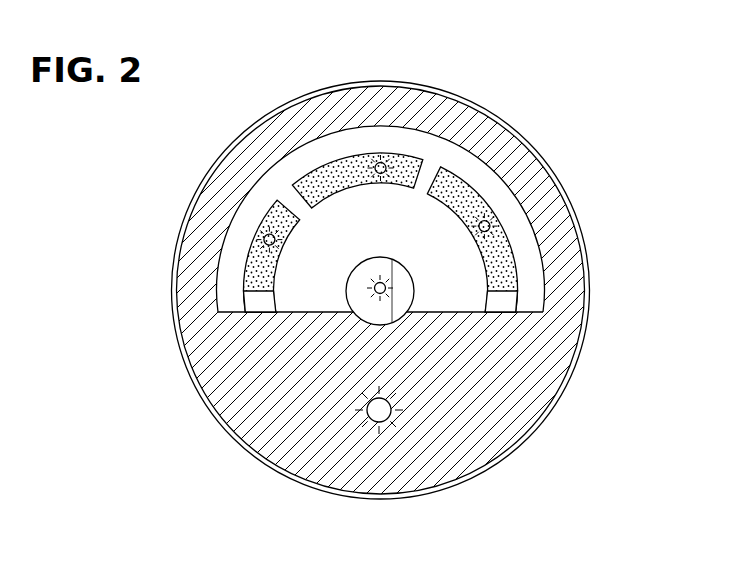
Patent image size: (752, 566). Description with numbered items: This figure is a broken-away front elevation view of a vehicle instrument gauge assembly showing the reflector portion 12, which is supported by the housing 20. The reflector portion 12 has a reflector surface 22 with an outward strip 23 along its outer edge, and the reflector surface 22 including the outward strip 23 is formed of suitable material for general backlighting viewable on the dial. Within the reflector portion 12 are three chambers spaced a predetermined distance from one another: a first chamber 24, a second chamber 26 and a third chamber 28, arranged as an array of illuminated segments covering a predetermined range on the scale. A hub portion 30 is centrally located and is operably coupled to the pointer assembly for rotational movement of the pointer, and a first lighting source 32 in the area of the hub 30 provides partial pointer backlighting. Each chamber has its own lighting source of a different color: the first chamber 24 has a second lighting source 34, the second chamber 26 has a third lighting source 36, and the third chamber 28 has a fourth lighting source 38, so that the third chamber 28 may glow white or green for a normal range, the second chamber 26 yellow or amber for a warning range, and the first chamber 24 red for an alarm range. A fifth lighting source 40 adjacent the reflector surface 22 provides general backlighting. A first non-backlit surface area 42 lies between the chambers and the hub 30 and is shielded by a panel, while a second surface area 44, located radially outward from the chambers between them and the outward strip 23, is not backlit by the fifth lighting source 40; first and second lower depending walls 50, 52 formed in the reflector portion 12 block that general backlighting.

The reflector portion 12 is at (597, 169).
The housing 20 is at (590, 247).
The reflector surface 22 is at (303, 383).
The outward strip 23 is at (490, 216).
The first chamber 24 is at (253, 265).
The second chamber 26 is at (352, 164).
The third chamber 28 is at (500, 258).
The hub portion 30 is at (414, 283).
The first lighting source 32 is at (372, 287).
The second lighting source 34 is at (263, 233).
The third lighting source 36 is at (388, 158).
The fourth lighting source 38 is at (518, 166).
The fifth lighting source 40 is at (392, 417).
The first non-backlit surface area 42 is at (446, 262).
The second surface area 44 is at (536, 278).
The first lower depending wall 50 is at (446, 318).
The second lower depending wall 52 is at (452, 140).